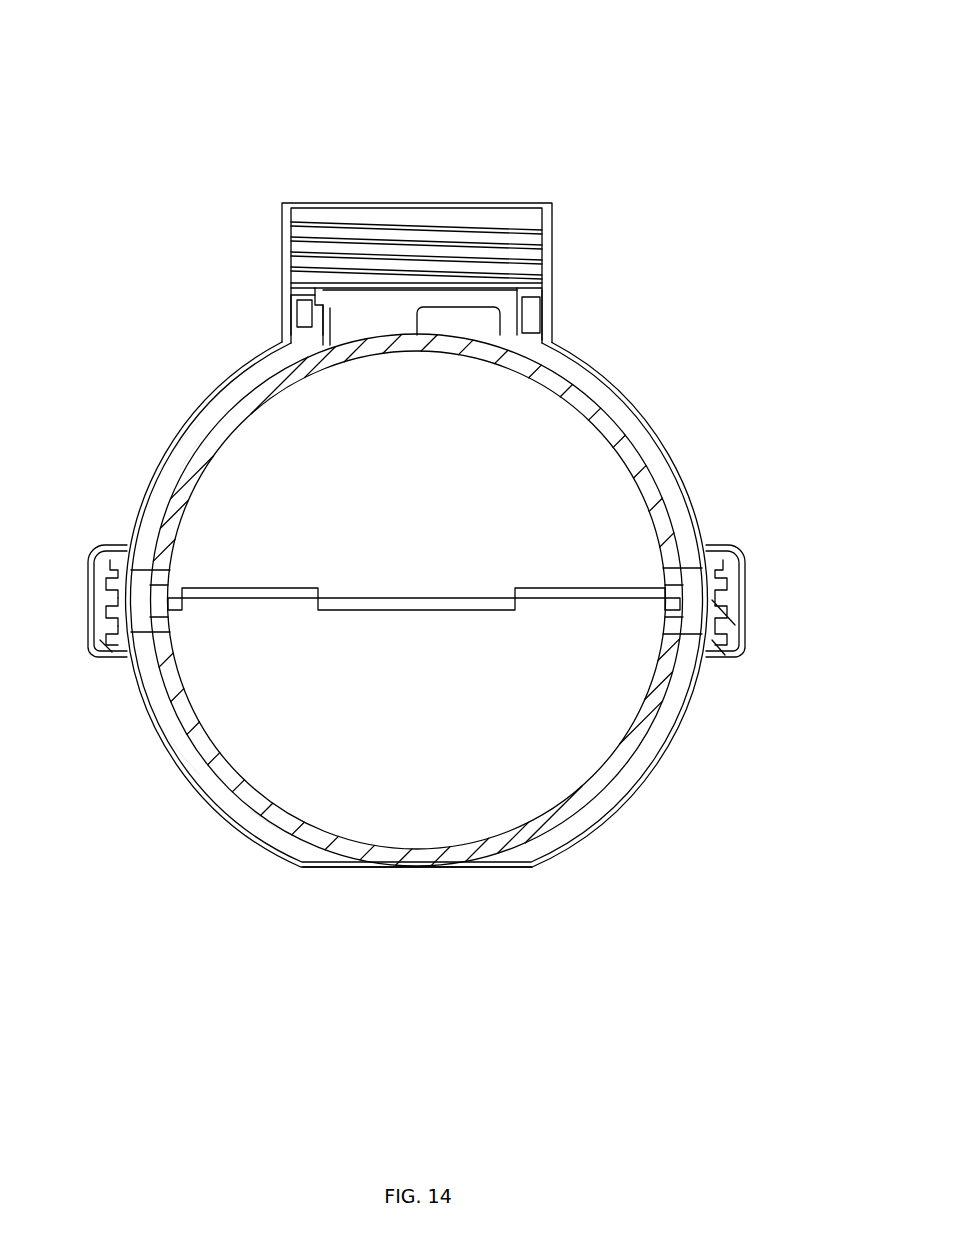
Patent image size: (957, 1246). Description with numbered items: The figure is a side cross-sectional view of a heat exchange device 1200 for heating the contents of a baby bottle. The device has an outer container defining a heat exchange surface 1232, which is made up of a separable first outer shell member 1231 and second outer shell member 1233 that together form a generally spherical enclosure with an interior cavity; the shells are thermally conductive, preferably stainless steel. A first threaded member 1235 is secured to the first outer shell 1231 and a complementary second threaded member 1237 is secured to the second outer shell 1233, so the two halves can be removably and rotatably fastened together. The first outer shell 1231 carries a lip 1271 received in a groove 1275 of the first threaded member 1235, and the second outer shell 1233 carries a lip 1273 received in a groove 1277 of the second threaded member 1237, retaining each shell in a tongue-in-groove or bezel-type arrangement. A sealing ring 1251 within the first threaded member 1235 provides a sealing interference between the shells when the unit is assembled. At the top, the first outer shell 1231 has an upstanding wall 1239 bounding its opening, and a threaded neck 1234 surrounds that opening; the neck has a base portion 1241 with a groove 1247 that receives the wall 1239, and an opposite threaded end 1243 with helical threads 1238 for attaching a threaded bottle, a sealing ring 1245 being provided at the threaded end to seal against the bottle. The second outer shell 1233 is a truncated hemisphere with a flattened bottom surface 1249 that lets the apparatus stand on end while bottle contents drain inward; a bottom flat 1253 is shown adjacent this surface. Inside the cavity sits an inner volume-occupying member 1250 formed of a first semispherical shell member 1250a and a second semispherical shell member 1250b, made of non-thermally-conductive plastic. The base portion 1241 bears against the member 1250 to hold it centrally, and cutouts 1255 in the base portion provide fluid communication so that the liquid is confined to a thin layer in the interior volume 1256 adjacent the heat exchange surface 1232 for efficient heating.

The heat exchange device 1200 is at (561, 24).
The first outer shell member 1231 is at (195, 410).
The heat exchange surface 1232 is at (150, 472).
The second outer shell member 1233 is at (192, 766).
The threaded neck 1234 is at (552, 243).
The first threaded member 1235 is at (740, 575).
The second threaded member 1237 is at (710, 655).
The helical threads 1238 is at (364, 247).
The upstanding wall 1239 is at (300, 338).
The base portion 1241 is at (333, 330).
The threaded end 1243 is at (540, 203).
The sealing ring 1245 is at (297, 292).
The groove 1247 is at (532, 317).
The flattened bottom surface 1249 is at (325, 870).
The inner volume-occupying member 1250 is at (660, 490).
The first semispherical shell member 1250a is at (196, 438).
The second semispherical shell member 1250b is at (262, 820).
The sealing ring 1251 is at (735, 580).
The base edge 1253 is at (508, 860).
The cutouts 1255 is at (470, 333).
The interior volume 1256 is at (640, 440).
The lip 1271 is at (105, 552).
The lip 1273 is at (96, 630).
The groove 1275 is at (95, 575).
The groove 1277 is at (97, 602).